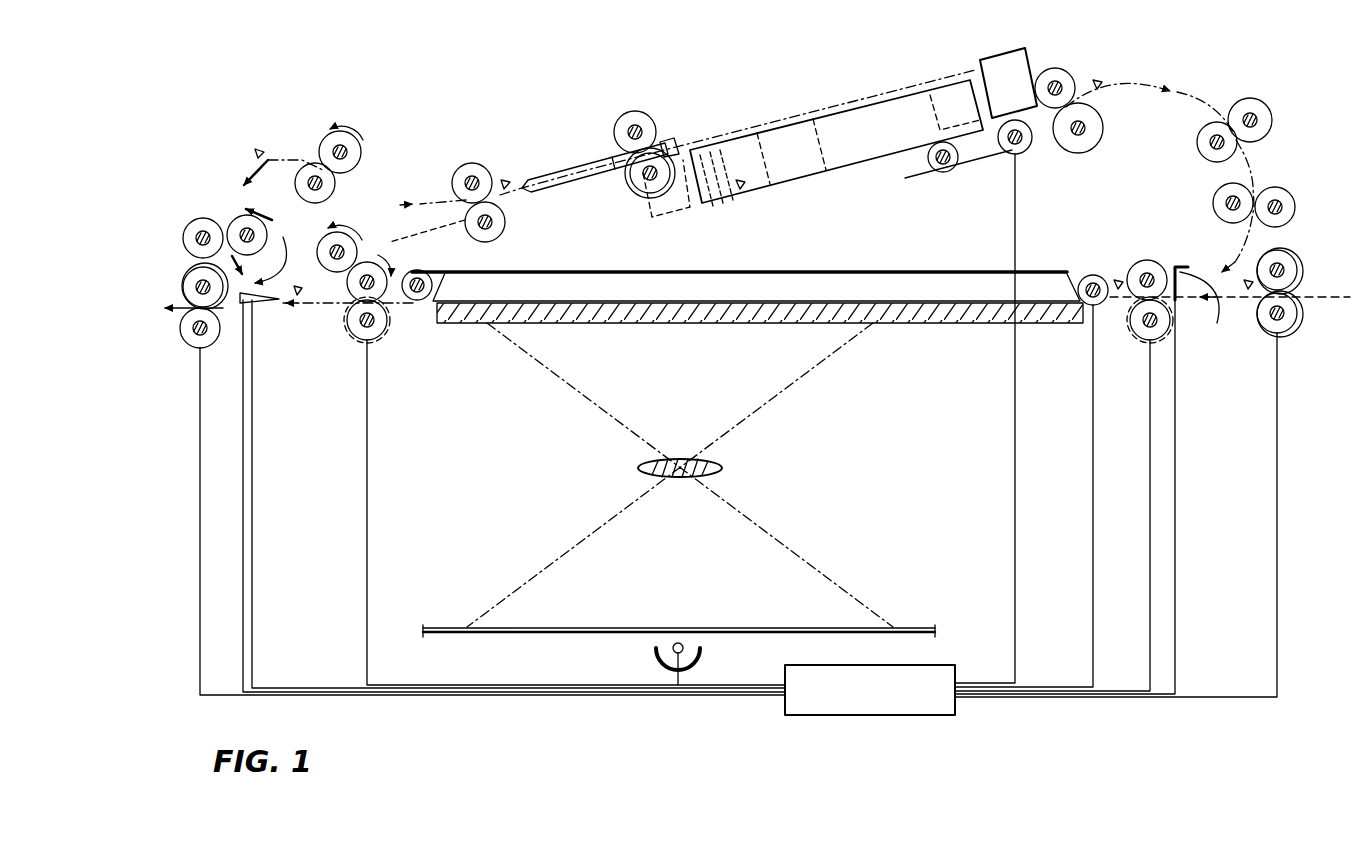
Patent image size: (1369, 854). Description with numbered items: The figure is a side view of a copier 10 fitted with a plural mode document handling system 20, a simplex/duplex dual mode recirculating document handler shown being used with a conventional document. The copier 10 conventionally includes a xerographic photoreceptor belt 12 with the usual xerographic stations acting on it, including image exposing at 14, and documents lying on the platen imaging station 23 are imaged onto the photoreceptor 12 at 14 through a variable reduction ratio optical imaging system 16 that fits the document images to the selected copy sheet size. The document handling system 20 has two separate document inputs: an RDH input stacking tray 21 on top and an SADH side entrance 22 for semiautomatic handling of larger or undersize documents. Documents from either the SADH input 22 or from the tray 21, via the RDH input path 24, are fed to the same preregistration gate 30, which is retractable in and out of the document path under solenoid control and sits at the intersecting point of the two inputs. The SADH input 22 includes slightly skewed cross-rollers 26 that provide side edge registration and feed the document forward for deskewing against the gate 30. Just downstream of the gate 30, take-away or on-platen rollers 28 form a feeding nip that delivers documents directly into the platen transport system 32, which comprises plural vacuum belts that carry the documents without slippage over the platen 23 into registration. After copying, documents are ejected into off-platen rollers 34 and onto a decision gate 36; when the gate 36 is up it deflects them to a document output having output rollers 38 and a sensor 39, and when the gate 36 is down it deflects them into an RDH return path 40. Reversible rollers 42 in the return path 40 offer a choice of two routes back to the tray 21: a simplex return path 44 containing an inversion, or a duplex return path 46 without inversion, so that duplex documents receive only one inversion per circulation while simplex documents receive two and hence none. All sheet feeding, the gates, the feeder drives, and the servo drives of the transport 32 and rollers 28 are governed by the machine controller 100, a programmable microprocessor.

The copier 10 is at (526, 404).
The xerographic photoreceptor belt 12 is at (438, 627).
The image exposing station 14 is at (662, 595).
The variable reduction ratio optical imaging system 16 is at (757, 482).
The document handling system 20 is at (552, 139).
The RDH input stacking tray 21 is at (887, 157).
The SADH side entrance 22 is at (1293, 287).
The platen imaging station 23 is at (917, 325).
The RDH input path 24 is at (1233, 257).
The skewed cross-rollers 26 is at (1287, 260).
The take-away or on-platen rollers 28 is at (1133, 267).
The preregistration gate 30 is at (1200, 306).
The platen transport system 32 is at (983, 266).
The off-platen rollers 34 is at (350, 302).
The decision gate 36 is at (255, 303).
The output rollers 38 is at (192, 288).
The sensor 39 is at (168, 290).
The RDH return path 40 is at (270, 246).
The reversible rollers 42 is at (238, 213).
The simplex return path 44 is at (373, 197).
The duplex return path 46 is at (411, 228).
The machine controller 100 is at (956, 667).